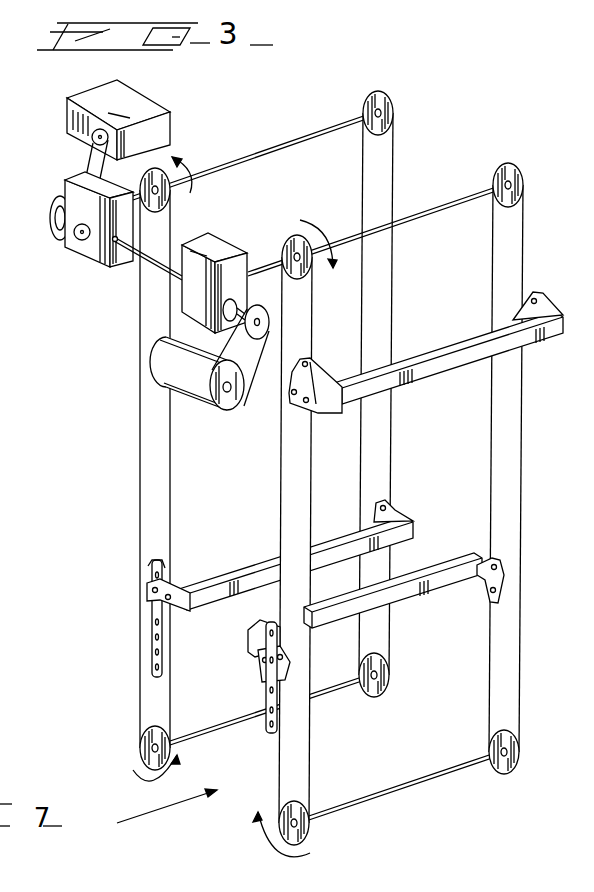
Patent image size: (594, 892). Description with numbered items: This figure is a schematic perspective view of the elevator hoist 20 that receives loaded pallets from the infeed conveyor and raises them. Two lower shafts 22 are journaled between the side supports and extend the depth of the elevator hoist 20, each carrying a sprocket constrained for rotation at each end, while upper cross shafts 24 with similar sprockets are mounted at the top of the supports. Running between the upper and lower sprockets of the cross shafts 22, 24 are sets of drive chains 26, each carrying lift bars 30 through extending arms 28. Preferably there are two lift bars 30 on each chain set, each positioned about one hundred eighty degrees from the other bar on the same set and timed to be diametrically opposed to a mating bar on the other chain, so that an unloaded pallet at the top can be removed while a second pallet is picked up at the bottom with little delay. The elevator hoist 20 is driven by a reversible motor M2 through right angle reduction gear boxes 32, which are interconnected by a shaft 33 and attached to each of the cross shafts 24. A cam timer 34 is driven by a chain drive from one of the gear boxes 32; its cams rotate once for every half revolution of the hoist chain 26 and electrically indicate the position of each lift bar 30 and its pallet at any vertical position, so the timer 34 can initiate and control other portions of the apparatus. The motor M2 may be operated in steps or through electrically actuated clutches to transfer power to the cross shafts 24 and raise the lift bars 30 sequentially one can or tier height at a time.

The elevator hoist 20 is at (98, 507).
The lower shafts 22 is at (334, 693).
The upper cross shafts 24 is at (330, 137).
The drive chains 26 is at (172, 484).
The extending arms 28 is at (315, 383).
The lift bars 30 is at (447, 372).
The right angle reduction gear boxes 32 is at (136, 226).
The shaft 33 is at (147, 257).
The timer 34 is at (158, 147).
The motor M2 is at (161, 369).